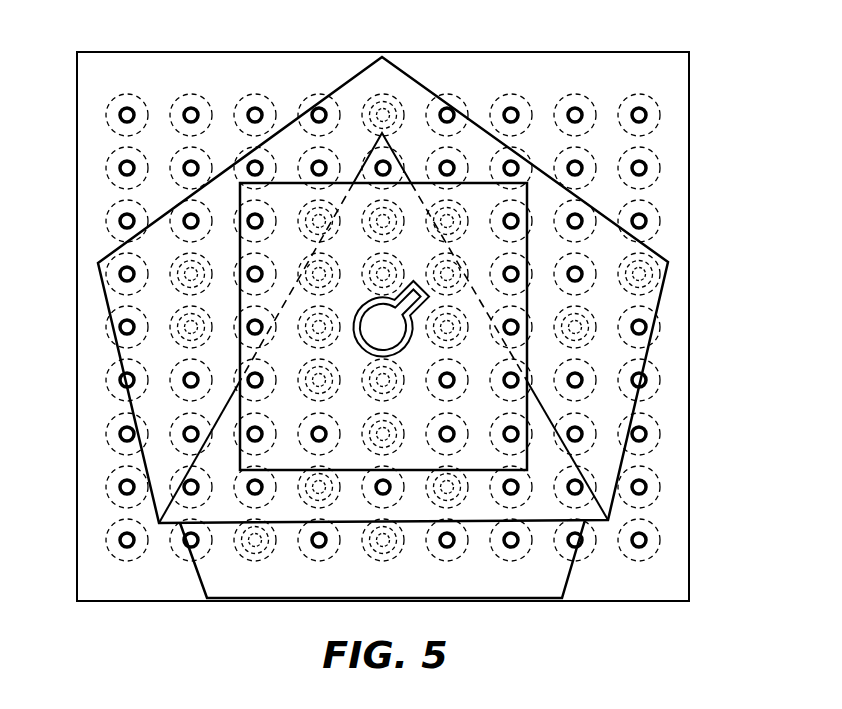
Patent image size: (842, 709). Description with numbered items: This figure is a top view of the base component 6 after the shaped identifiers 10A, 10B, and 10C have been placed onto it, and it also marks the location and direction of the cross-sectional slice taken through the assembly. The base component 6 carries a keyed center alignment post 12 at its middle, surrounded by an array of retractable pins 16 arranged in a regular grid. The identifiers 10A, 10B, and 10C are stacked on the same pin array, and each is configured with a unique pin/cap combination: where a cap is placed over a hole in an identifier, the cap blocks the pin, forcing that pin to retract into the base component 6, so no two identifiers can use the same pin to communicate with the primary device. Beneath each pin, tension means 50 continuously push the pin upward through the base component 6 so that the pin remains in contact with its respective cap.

The base component 6 is at (688, 85).
The retractable pins 16 is at (186, 112).
The tension means 50 is at (190, 93).
The shaped identifier 10A is at (412, 76).
The shaped identifier 10B is at (600, 511).
The shaped identifier 10C is at (478, 183).
The keyed center alignment post 12 is at (370, 335).